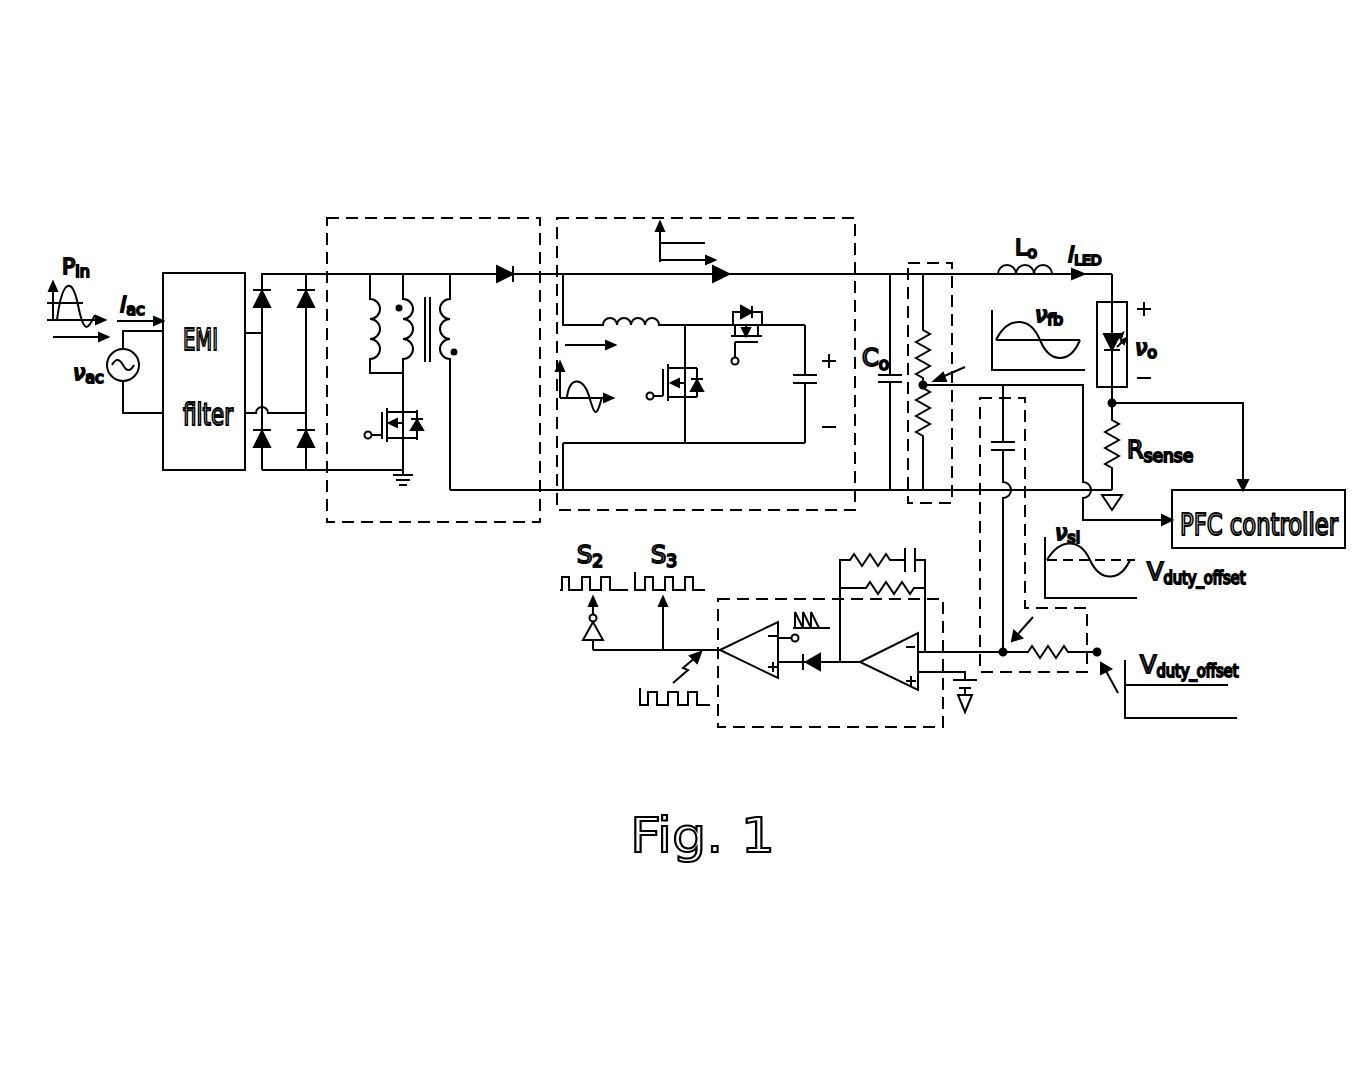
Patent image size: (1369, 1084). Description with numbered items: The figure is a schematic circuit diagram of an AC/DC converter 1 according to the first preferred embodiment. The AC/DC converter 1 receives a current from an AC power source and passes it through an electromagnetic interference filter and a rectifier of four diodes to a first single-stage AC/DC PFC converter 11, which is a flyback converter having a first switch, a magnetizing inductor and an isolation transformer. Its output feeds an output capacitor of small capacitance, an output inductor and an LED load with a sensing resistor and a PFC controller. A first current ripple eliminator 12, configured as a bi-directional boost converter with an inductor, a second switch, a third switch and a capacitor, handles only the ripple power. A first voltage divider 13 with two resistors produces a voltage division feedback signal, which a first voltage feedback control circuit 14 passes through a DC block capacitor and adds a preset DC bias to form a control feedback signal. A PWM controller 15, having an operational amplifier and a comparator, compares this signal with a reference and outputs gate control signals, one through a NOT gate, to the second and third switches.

The AC/DC converter 1 is at (1186, 169).
The first single-stage AC/DC PFC converter 11 is at (434, 218).
The first current ripple eliminator 12 is at (627, 218).
The first voltage divider 13 is at (930, 262).
The first voltage feedback control circuit 14 is at (1087, 632).
The PWM controller 15 is at (917, 727).